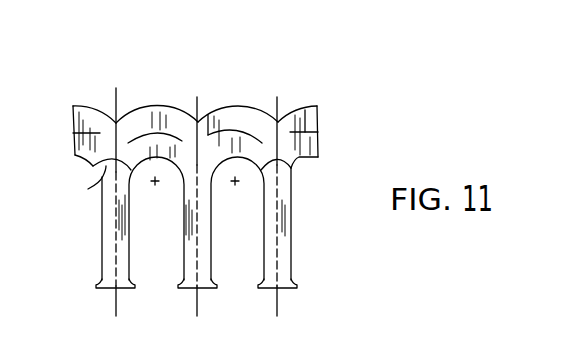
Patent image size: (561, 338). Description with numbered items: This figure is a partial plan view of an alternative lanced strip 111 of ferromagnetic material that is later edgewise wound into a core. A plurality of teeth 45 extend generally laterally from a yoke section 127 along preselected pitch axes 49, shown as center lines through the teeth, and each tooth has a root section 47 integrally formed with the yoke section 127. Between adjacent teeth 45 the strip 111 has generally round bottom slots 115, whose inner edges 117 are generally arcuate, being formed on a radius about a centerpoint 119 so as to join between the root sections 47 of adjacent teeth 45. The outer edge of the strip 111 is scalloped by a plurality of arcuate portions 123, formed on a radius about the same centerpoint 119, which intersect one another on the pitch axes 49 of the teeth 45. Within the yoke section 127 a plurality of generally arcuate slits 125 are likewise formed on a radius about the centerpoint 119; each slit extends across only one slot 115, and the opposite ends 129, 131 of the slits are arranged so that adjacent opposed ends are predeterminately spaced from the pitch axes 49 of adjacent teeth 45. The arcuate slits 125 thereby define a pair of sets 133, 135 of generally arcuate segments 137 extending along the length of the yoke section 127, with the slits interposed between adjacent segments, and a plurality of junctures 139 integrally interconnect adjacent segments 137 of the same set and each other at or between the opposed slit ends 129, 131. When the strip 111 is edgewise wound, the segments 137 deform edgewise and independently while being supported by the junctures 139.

The strip 111 is at (354, 97).
The round bottom slots 115 is at (167, 247).
The inner edges 117 is at (97, 163).
The centerpoint 119 is at (154, 184).
The arcuate portions 123 is at (305, 110).
The arcuate slits 125 is at (260, 143).
The yoke section 127 is at (72, 116).
The opposite end 129 is at (208, 132).
The opposite end 131 is at (277, 97).
The set of arcuate segments 133 is at (316, 121).
The set of arcuate segments 135 is at (312, 148).
The arcuate segments 137 is at (153, 145).
The junctures 139 is at (111, 143).
The teeth 45 is at (103, 256).
The root sections 47 is at (103, 177).
The pitch axes 49 is at (117, 298).